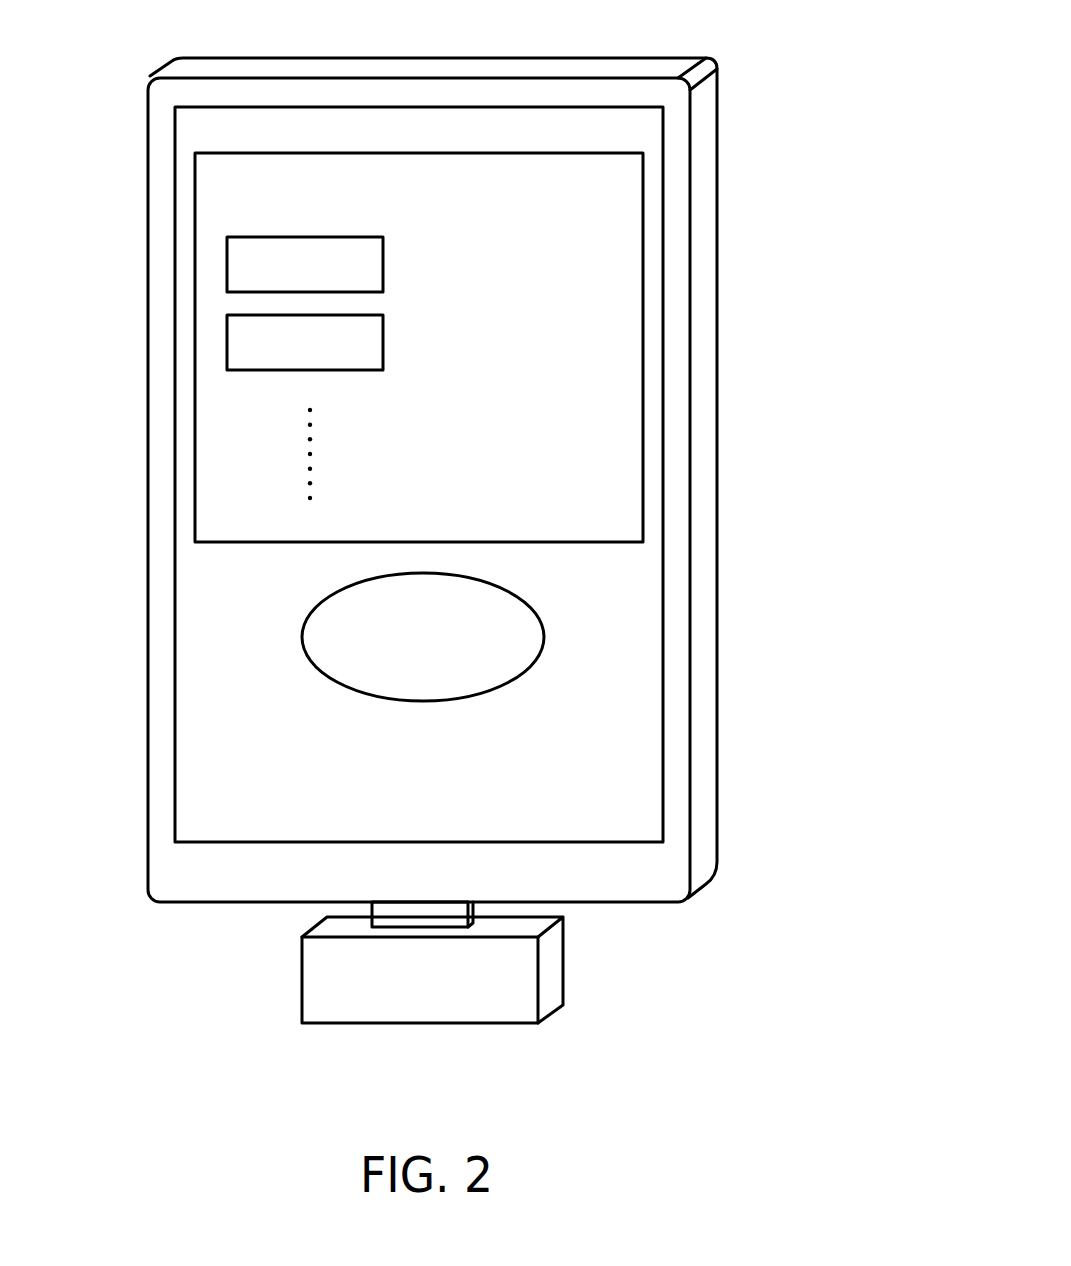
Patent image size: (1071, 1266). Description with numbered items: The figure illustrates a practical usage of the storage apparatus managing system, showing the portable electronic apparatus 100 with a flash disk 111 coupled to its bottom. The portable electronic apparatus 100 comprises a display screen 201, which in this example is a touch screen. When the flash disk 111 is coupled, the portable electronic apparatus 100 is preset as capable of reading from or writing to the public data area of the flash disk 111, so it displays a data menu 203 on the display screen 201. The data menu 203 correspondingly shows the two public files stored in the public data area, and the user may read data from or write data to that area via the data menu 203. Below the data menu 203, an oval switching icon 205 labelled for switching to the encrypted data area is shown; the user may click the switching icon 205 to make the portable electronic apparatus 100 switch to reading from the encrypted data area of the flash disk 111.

The portable electronic apparatus 100 is at (655, 57).
The display screen 201 is at (663, 201).
The data menu 203 is at (644, 304).
The switching icon 205 is at (302, 634).
The flash disk 111 is at (553, 965).